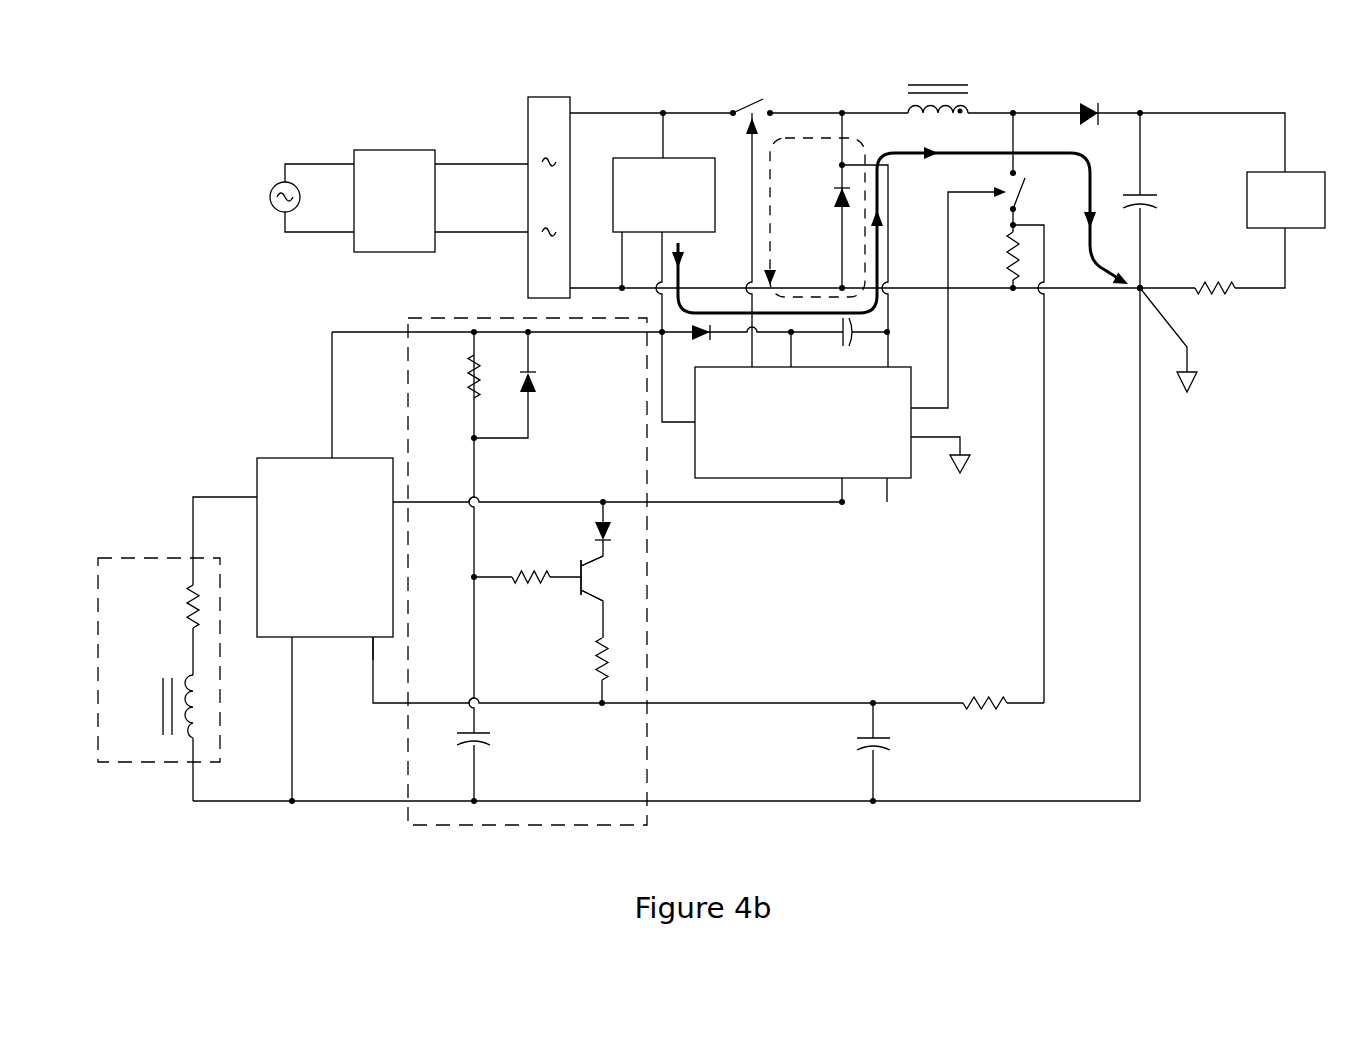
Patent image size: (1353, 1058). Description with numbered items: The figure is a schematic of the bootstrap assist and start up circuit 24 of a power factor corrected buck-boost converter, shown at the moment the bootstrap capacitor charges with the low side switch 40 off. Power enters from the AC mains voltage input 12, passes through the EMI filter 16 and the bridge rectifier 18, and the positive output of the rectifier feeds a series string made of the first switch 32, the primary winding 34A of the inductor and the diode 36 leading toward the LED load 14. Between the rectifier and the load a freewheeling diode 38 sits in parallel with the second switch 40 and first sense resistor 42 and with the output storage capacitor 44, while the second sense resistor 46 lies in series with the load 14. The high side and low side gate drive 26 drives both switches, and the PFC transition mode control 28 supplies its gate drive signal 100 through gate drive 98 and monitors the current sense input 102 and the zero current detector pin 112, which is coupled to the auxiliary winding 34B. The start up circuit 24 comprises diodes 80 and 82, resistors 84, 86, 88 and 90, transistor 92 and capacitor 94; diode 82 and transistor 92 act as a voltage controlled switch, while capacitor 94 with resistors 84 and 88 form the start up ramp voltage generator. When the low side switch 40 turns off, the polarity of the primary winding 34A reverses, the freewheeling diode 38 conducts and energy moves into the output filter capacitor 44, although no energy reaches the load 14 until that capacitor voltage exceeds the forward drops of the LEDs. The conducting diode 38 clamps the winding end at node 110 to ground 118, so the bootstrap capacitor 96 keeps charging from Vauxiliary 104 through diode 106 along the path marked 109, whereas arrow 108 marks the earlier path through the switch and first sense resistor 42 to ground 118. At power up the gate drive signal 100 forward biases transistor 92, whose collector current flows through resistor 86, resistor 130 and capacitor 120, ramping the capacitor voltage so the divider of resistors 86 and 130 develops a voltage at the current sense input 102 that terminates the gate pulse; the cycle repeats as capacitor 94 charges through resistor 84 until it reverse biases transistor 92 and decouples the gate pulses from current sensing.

The AC mains voltage input 12 is at (280, 182).
The load 14 is at (1313, 168).
The EMI filter 16 is at (397, 148).
The bridge rectifier 18 is at (555, 95).
The bootstrap startup and assist circuit 24 is at (397, 820).
The high side and low side gate drive 26 is at (905, 482).
The PFC transition mode control 28 is at (277, 638).
The first switch 32 is at (750, 100).
The primary winding 34A is at (968, 100).
The auxiliary winding 34B is at (162, 708).
The diode 36 is at (1087, 105).
The freewheeling diode 38 is at (833, 198).
The second switch 40 is at (1027, 192).
The first sense resistor 42 is at (1000, 279).
The output storage capacitor 44 is at (1153, 193).
The second sense resistor 46 is at (1230, 288).
The diode 80 is at (532, 393).
The diode 82 is at (592, 527).
The resistor 84 is at (468, 388).
The resistor 86 is at (590, 660).
The resistor 88 is at (535, 587).
The resistor 90 is at (187, 588).
The transistor 92 is at (590, 565).
The capacitor 94 is at (485, 743).
The bootstrap capacitor 96 is at (852, 322).
The gate drive 98 is at (378, 485).
The gate drive signal 100 is at (413, 507).
The current sense input 102 is at (363, 656).
The Vauxiliary 104 is at (683, 157).
The diode 106 is at (690, 333).
The arrow 108 is at (1123, 295).
The charging path 109 is at (788, 138).
The node 110 is at (896, 106).
The zero current detector pin 112 is at (234, 483).
The ground 118 is at (1192, 390).
The capacitor 120 is at (882, 748).
The resistor 130 is at (985, 720).